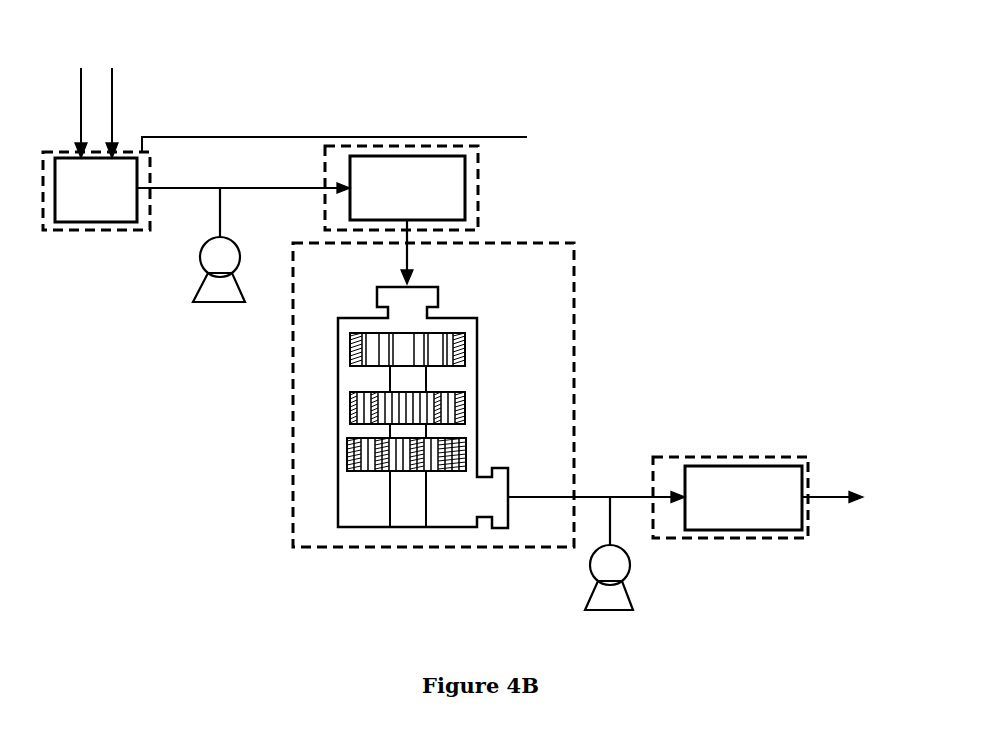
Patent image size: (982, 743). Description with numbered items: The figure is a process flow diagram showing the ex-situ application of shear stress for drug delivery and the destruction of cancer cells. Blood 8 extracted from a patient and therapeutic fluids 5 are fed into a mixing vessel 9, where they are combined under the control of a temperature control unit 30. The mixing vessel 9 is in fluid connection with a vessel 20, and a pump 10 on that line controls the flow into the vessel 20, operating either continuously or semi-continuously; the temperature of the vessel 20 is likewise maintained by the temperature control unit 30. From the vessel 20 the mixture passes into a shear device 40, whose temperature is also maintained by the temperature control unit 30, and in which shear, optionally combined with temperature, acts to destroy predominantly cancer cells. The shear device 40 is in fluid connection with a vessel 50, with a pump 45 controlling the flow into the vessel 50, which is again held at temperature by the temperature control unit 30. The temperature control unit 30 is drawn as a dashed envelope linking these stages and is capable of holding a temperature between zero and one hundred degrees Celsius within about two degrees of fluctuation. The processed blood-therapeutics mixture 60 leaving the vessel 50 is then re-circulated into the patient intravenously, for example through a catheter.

The therapeutic fluids 5 is at (78, 92).
The blood 8 is at (118, 92).
The mixing vessel 9 is at (96, 191).
The pump 10 is at (200, 256).
The vessel 20 is at (401, 215).
The temperature control unit 30 is at (742, 457).
The shear device 40 is at (463, 320).
The pump 45 is at (590, 565).
The vessel 50 is at (730, 497).
The processed blood-therapeutics mixture 60 is at (830, 493).